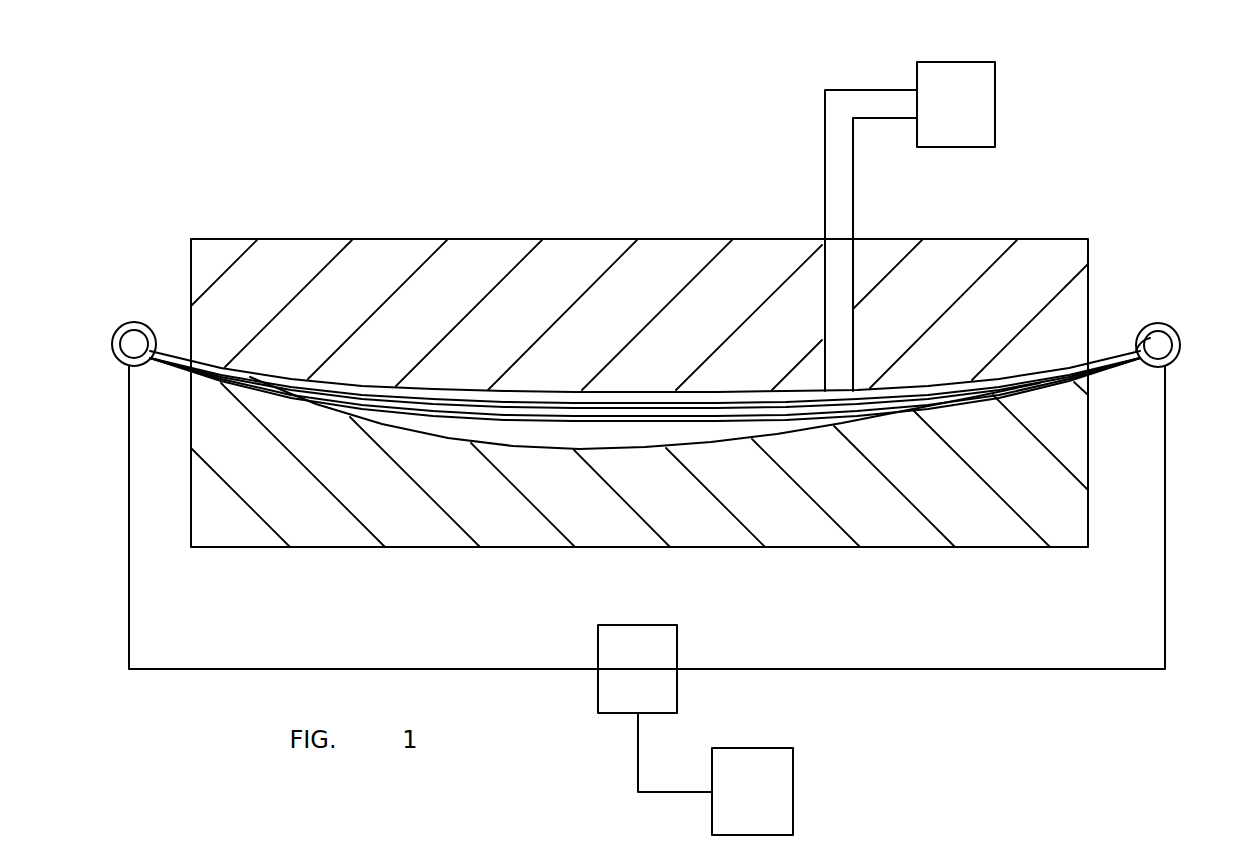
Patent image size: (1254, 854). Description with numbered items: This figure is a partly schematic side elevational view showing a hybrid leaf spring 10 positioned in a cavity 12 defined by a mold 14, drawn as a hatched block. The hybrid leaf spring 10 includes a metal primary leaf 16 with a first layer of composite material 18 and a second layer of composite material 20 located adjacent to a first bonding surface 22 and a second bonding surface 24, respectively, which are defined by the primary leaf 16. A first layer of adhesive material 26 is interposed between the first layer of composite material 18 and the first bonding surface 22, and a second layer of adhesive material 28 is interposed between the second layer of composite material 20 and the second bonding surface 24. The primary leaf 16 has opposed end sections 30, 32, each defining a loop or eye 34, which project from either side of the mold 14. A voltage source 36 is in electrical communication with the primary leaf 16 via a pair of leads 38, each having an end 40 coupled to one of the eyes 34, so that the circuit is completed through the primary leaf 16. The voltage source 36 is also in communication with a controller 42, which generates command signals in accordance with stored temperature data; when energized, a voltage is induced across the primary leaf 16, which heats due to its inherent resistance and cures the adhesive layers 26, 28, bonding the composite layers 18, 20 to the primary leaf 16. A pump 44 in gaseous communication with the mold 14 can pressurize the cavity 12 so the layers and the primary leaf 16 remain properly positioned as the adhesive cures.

The hybrid leaf spring 10 is at (652, 371).
The cavity 12 is at (645, 410).
The mold 14 is at (263, 222).
The primary leaf 16 is at (1118, 362).
The first layer of composite material 18 is at (585, 402).
The second layer of composite material 20 is at (595, 437).
The first bonding surface 22 is at (660, 405).
The second bonding surface 24 is at (680, 425).
The first layer of adhesive material 26 is at (533, 408).
The second layer of adhesive material 28 is at (533, 425).
The end section 30 is at (657, 329).
The end section 32 is at (1174, 310).
The eye 34 is at (113, 356).
The voltage source 36 is at (620, 650).
The leads 38 is at (396, 668).
The end 40 is at (128, 366).
The controller 42 is at (760, 765).
The pump 44 is at (937, 78).